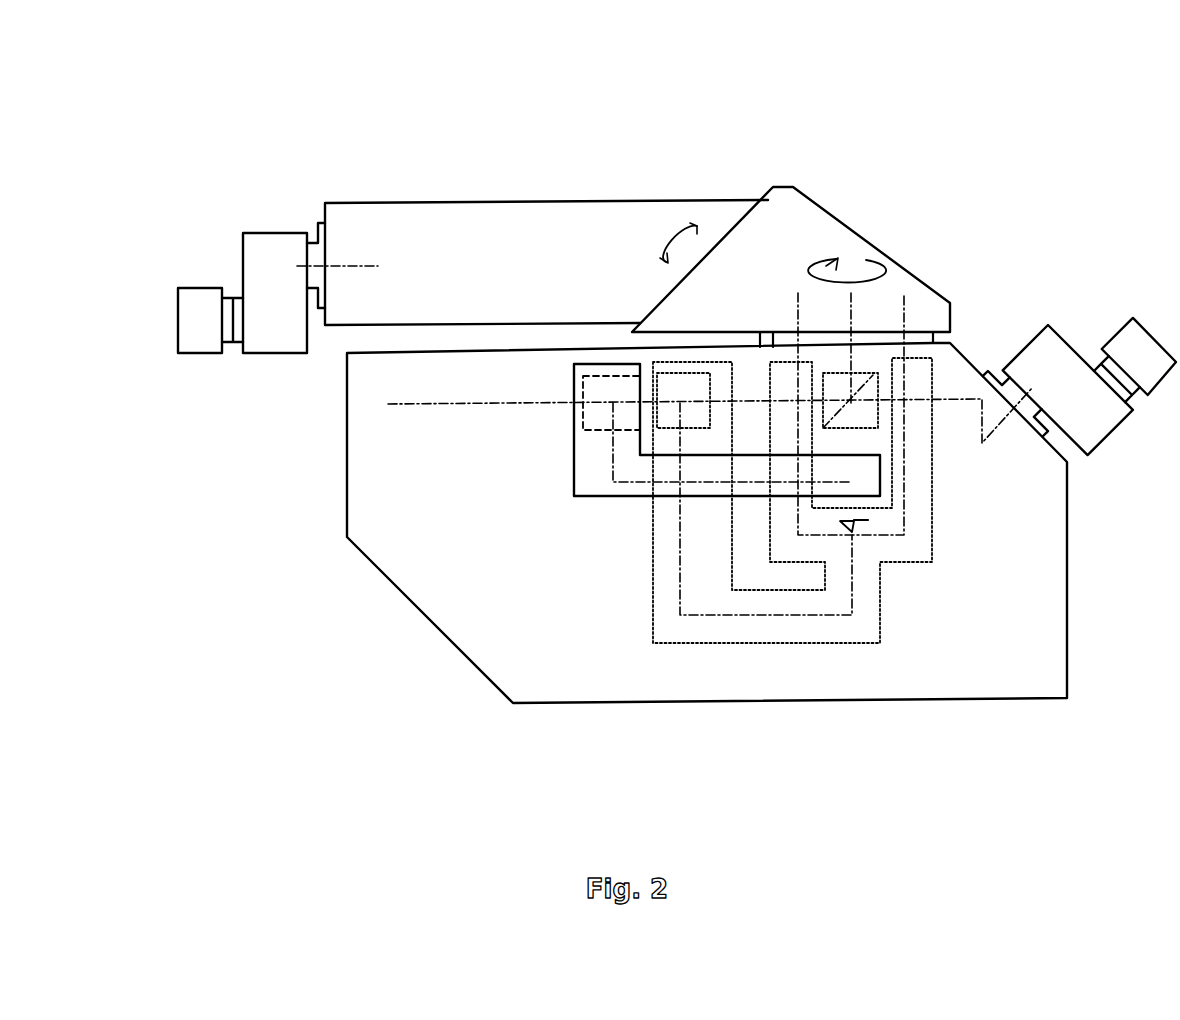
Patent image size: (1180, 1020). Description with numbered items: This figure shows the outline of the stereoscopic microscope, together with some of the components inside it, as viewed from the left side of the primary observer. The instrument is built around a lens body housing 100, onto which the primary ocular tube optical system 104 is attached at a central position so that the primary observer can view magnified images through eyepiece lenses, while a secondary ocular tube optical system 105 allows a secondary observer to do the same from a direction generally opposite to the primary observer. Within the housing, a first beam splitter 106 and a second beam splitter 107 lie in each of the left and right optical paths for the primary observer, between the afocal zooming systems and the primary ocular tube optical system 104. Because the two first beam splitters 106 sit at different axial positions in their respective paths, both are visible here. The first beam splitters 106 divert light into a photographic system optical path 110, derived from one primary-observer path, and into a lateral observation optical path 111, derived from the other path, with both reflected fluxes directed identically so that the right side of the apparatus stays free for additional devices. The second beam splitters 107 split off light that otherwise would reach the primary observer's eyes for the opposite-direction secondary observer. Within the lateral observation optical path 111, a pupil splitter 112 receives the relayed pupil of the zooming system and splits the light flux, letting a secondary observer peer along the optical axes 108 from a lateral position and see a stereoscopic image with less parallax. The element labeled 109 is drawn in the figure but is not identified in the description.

The lens body housing 100 is at (490, 640).
The primary ocular tube optical system 104 is at (1140, 350).
The secondary ocular tube optical system 105 is at (773, 192).
The first beam splitter 106 is at (672, 392).
The second beam splitter 107 is at (717, 280).
The optical axis 108 is at (905, 342).
The rotation arrow of second module 109 is at (850, 307).
The photographic system optical path 110 is at (593, 473).
The lateral observation optical path 111 is at (800, 633).
The pupil splitter 112 is at (858, 530).